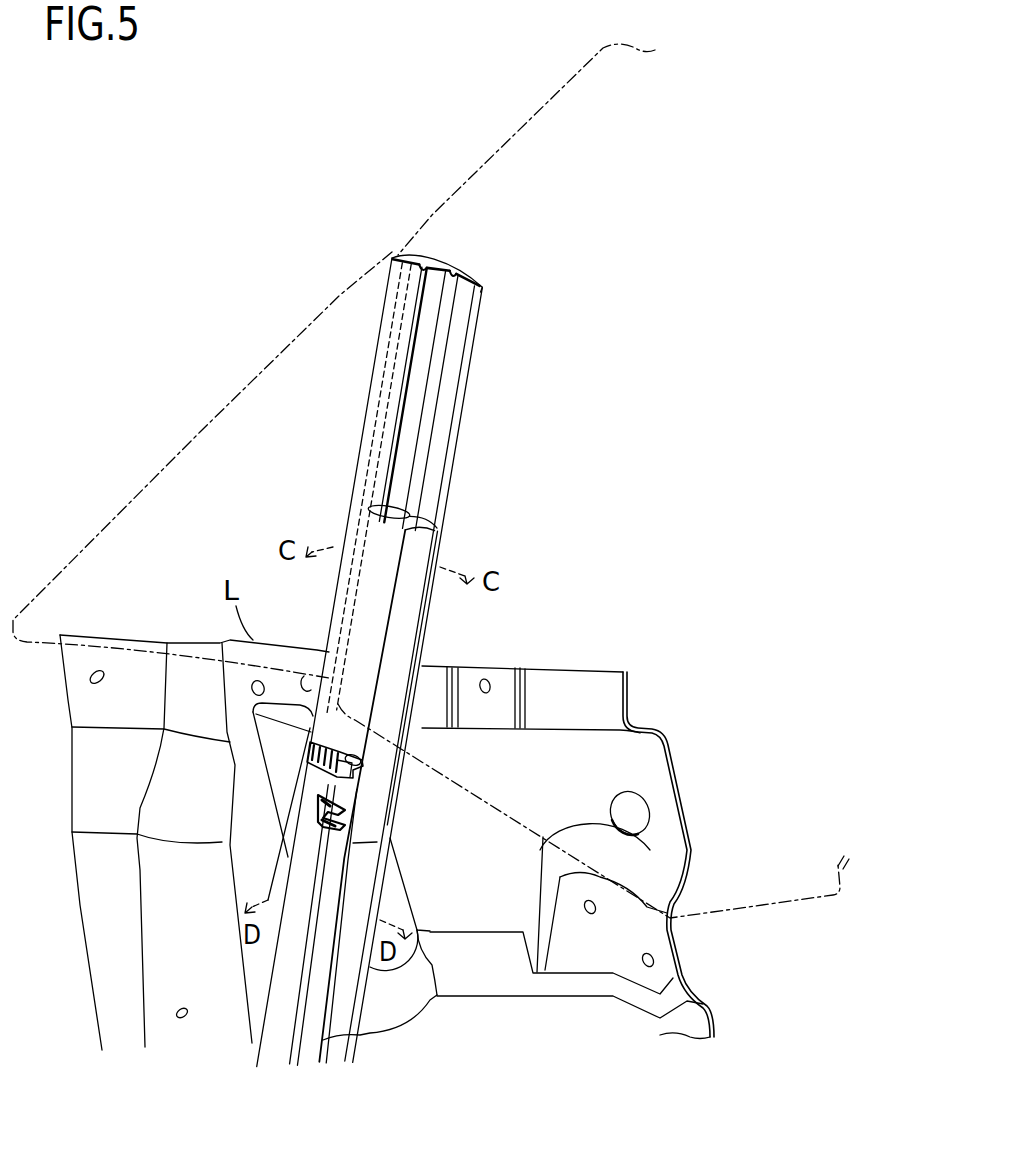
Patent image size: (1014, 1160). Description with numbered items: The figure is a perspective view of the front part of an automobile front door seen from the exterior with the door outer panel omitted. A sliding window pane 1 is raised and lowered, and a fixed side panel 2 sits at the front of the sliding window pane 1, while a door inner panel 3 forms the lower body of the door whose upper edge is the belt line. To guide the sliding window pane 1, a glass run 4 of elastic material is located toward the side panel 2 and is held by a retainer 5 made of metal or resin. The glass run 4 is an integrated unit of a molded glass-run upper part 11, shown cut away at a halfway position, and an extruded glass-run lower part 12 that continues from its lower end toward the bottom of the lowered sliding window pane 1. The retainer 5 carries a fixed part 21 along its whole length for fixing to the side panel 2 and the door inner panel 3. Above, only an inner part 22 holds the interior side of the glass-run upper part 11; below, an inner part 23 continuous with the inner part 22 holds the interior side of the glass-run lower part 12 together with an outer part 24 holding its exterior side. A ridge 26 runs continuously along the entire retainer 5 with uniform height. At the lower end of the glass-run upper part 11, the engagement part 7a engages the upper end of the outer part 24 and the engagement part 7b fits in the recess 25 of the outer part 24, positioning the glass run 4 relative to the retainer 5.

The sliding window pane 1 is at (512, 128).
The fixed side panel 2 is at (205, 425).
The door inner panel 3 is at (668, 748).
The glass run 4 is at (401, 745).
The retainer 5 is at (467, 393).
The engagement part 7a is at (308, 758).
The engagement part 7b is at (340, 840).
The glass-run upper part 11 is at (413, 612).
The glass-run lower part 12 is at (367, 865).
The fixed part 21 is at (380, 341).
The inner part (retainer body) 22 is at (457, 318).
The inner part (retainer body) 23 is at (352, 1045).
The outer part 24 is at (277, 1035).
The recess 25 is at (327, 812).
The ridge 26 is at (450, 283).